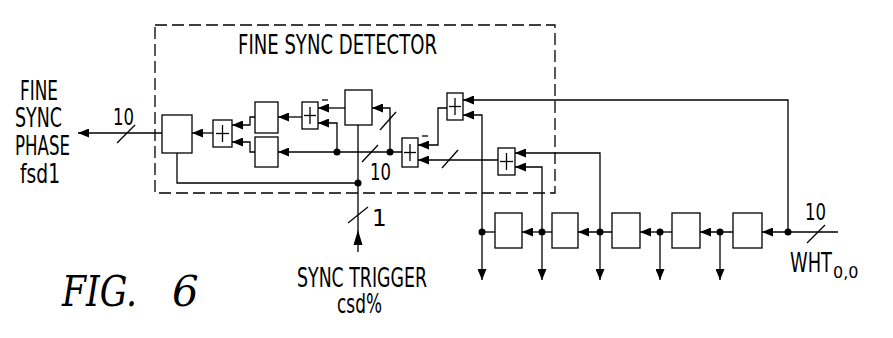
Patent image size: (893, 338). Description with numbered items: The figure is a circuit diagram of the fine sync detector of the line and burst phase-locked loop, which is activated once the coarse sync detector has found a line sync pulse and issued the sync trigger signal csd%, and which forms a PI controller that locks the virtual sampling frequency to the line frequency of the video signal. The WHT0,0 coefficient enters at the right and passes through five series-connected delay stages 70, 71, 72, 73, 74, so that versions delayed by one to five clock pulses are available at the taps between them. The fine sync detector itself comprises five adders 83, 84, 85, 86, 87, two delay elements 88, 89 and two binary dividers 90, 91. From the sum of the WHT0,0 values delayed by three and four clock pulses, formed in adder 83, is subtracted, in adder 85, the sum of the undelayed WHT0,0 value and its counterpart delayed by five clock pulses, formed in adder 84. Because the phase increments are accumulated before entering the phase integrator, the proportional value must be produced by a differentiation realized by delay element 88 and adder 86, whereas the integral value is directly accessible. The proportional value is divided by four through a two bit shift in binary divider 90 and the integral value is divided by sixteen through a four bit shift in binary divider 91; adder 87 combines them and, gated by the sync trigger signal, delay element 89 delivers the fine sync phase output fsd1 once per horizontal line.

The delay stage 70 is at (746, 248).
The delay stage 71 is at (686, 248).
The delay stage 72 is at (626, 248).
The delay stage 73 is at (565, 248).
The delay stage 74 is at (508, 248).
The adder 83 is at (506, 148).
The adder 84 is at (456, 93).
The adder 85 is at (410, 167).
The adder 86 is at (310, 102).
The adder 87 is at (221, 120).
The delay element 88 is at (356, 90).
The delay element 89 is at (192, 146).
The binary divider 90 is at (268, 102).
The binary divider 91 is at (278, 163).